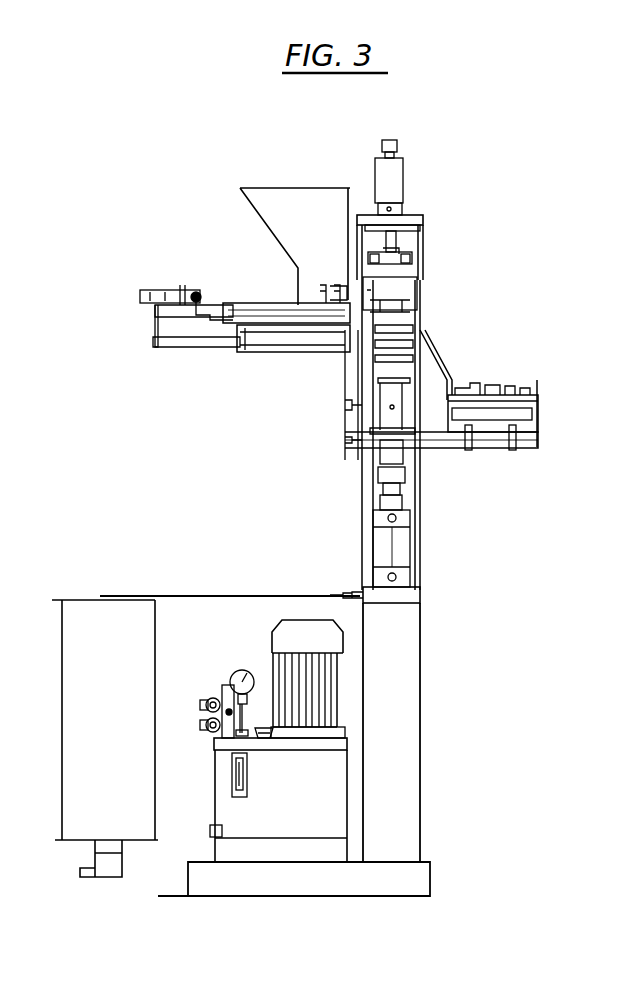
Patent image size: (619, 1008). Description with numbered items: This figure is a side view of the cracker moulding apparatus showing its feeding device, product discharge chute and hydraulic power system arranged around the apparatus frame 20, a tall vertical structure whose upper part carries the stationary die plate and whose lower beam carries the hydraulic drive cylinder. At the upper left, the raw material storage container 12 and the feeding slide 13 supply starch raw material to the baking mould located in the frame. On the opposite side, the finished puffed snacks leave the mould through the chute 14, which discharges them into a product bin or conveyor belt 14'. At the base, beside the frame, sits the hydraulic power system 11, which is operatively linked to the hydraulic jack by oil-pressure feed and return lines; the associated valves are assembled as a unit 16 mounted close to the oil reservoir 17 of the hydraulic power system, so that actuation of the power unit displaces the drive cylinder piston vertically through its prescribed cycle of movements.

The hydraulic power system 11 is at (260, 645).
The raw material storage container 12 is at (247, 210).
The feeding slide 13 is at (218, 305).
The chute 14 is at (466, 357).
The conveyor belt 14' is at (466, 409).
The valve unit 16 is at (195, 682).
The oil reservoir 17 is at (232, 812).
The apparatus frame 20 is at (420, 752).